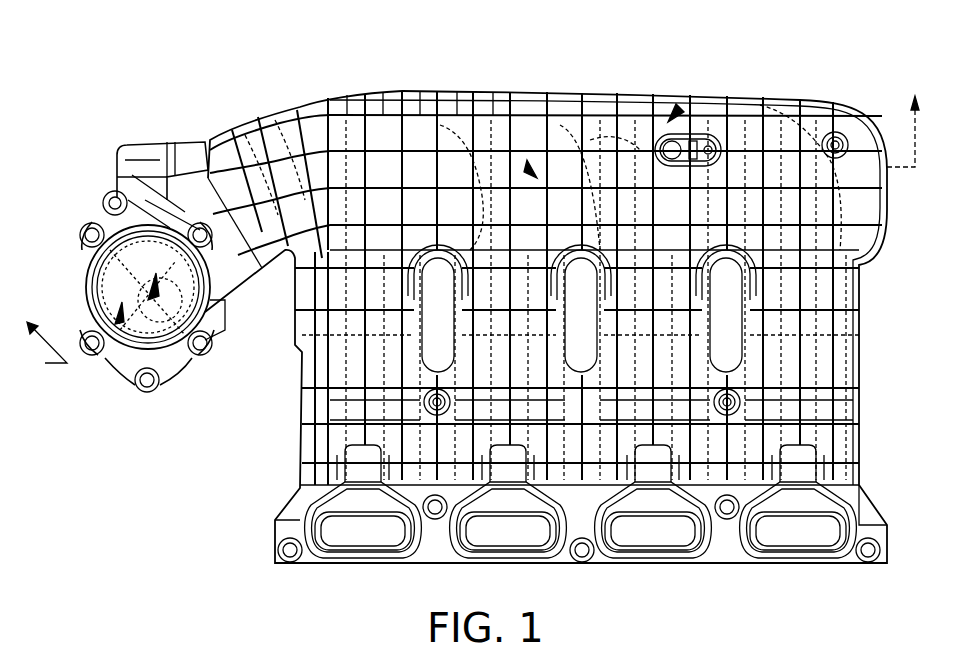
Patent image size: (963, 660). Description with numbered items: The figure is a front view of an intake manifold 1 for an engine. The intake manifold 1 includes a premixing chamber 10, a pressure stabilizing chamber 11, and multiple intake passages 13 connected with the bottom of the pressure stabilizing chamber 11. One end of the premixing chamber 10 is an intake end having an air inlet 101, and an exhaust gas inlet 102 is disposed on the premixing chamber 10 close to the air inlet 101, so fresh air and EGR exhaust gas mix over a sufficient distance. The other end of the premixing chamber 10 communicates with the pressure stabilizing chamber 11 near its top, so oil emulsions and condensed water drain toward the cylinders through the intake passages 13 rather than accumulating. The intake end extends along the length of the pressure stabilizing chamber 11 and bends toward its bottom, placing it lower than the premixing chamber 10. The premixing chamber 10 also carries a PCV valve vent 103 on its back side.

The intake manifold 1 is at (328, 98).
The premixing chamber 10 is at (527, 160).
The pressure stabilizing chamber 11 is at (678, 110).
The intake passages 13 is at (812, 322).
The air inlet 101 is at (117, 368).
The exhaust gas inlet 102 is at (113, 196).
The PCV valve vent 103 is at (148, 152).